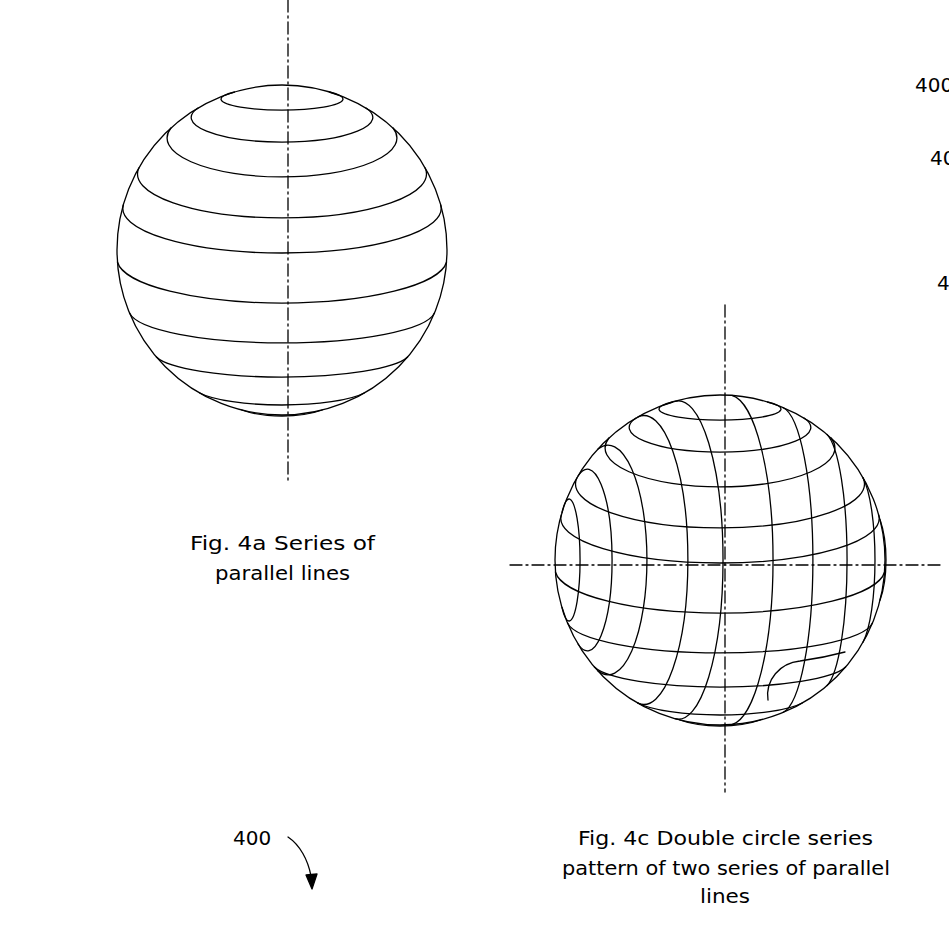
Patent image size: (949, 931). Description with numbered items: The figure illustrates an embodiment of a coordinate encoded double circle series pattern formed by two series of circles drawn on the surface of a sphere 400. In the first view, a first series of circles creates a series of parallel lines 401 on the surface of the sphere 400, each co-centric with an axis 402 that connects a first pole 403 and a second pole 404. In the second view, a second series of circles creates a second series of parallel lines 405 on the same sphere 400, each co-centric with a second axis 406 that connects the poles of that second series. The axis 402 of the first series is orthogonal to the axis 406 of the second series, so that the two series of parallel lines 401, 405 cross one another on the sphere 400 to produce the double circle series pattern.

In FIG. 4A, the sphere 400 is at (468, 267).
In FIG. 4A, the parallel lines 401 is at (437, 203).
In FIG. 4C, the parallel lines 401 is at (737, 477).
In FIG. 4A, the axis 402 is at (303, 49).
In FIG. 4C, the axis 402 is at (746, 356).
In FIG. 4A, the first pole 403 is at (287, 85).
In FIG. 4A, the second pole 404 is at (282, 417).
In FIG. 4C, the second series of parallel lines 405 is at (768, 700).
In FIG. 4C, the axis 406 is at (515, 590).